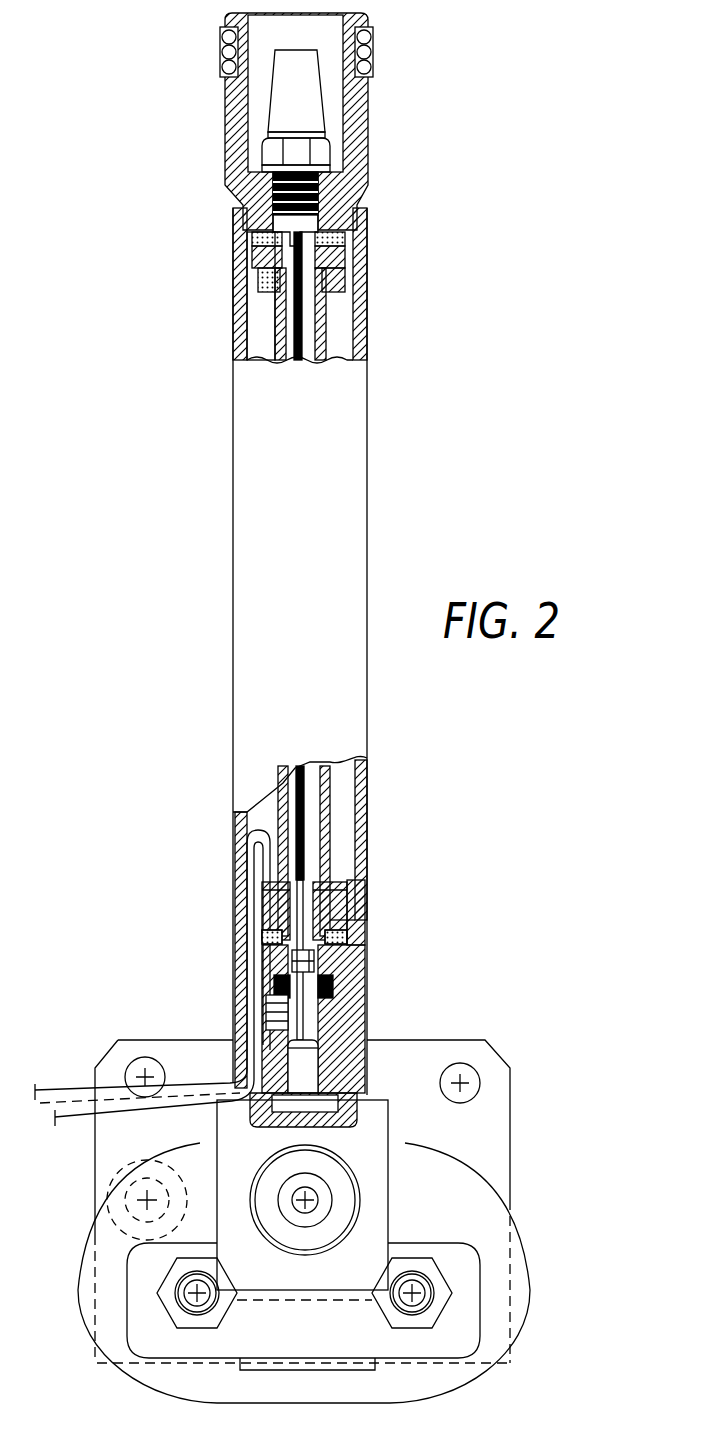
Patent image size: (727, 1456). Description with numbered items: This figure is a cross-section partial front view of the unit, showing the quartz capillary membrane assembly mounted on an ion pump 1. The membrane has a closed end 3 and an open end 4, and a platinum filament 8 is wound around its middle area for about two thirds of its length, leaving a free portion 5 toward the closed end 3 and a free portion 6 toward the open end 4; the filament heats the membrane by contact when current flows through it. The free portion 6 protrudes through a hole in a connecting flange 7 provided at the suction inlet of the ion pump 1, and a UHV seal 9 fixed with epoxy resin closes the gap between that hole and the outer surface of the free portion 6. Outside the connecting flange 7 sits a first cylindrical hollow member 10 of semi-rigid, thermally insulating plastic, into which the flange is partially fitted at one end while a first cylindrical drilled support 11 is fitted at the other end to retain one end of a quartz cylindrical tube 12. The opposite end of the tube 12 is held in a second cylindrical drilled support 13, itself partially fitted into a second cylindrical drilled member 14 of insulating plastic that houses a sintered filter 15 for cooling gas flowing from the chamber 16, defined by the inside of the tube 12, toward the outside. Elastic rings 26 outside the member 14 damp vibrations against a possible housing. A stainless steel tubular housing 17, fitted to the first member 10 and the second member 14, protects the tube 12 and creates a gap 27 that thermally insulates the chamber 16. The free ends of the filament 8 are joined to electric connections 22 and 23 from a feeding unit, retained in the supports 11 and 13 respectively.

The ion pump 1 is at (437, 1382).
The closed end 3 is at (330, 225).
The open end 4 is at (320, 1042).
The free portion 5 is at (346, 270).
The free portion 6 is at (362, 995).
The connecting flange 7 is at (273, 1007).
The platinum filament 8 is at (297, 338).
The UHV seal 9 is at (283, 960).
The first cylindrical hollow member 10 is at (352, 1066).
The first cylindrical drilled support 11 is at (348, 903).
The quartz cylindrical tube 12 is at (327, 792).
The second cylindrical drilled support 13 is at (333, 283).
The second cylindrical drilled member 14 is at (368, 113).
The sintered filter 15 is at (323, 103).
The chamber 16 is at (293, 788).
The tubular housing 17 is at (368, 494).
The electric connection 22 is at (250, 858).
The electric connection 23 is at (267, 345).
The elastic rings 26 is at (372, 64).
The gap 27 is at (343, 832).